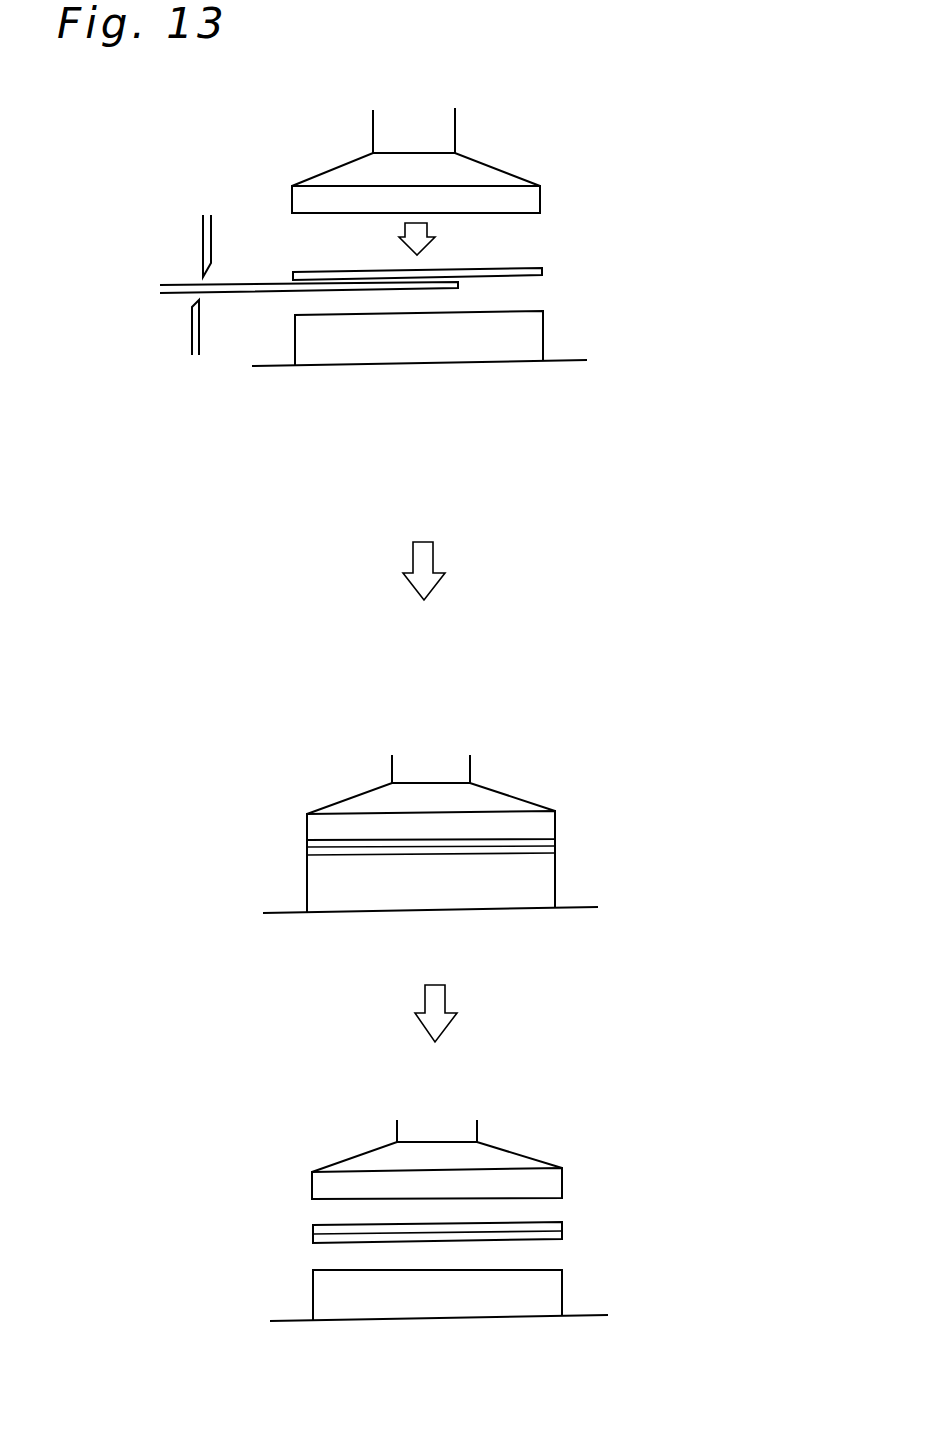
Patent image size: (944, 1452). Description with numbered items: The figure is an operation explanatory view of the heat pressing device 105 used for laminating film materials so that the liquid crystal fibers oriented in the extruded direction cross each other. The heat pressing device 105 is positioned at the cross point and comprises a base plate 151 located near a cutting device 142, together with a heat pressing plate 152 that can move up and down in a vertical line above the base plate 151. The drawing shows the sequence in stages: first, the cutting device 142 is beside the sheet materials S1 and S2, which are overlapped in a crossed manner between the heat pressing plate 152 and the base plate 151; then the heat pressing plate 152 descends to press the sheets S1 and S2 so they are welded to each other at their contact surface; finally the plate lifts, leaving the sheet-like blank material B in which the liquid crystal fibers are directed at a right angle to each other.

The heat pressing plate 152 is at (475, 168).
The heat pressing device 105 is at (583, 150).
The cutting device 142 is at (203, 240).
The first sheet S1 is at (515, 266).
The second sheet S2 is at (267, 290).
The base plate 151 is at (463, 345).
The laminated body B is at (570, 1230).